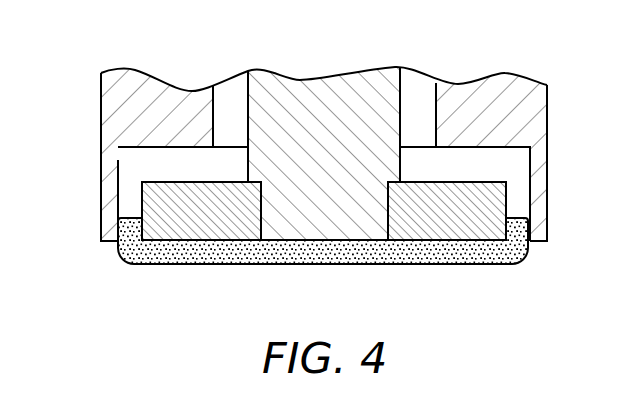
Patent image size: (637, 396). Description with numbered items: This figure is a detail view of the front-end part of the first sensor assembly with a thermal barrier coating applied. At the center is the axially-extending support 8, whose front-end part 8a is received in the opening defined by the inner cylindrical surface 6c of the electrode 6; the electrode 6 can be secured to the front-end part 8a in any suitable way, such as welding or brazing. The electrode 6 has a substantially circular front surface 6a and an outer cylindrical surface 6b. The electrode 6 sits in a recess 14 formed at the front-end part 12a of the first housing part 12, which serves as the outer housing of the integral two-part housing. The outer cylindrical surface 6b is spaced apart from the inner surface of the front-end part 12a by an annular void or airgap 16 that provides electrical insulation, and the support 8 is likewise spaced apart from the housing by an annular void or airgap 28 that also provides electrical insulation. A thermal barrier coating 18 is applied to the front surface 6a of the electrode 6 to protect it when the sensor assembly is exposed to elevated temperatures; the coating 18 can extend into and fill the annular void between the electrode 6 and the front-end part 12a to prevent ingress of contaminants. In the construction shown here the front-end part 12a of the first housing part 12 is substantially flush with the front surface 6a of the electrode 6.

The electrode 6 is at (445, 228).
The front surface 6a is at (192, 236).
The outer cylindrical surface 6b is at (140, 194).
The inner cylindrical surface 6c is at (387, 220).
The support 8 is at (331, 88).
The front-end part of the support 8a is at (292, 227).
The first housing part 12 is at (508, 88).
The front-end part of the first housing part 12a is at (107, 180).
The recess 14 is at (518, 160).
The annular void 16 is at (518, 198).
The thermal barrier coating 18 is at (523, 252).
The annular void 28 is at (230, 88).